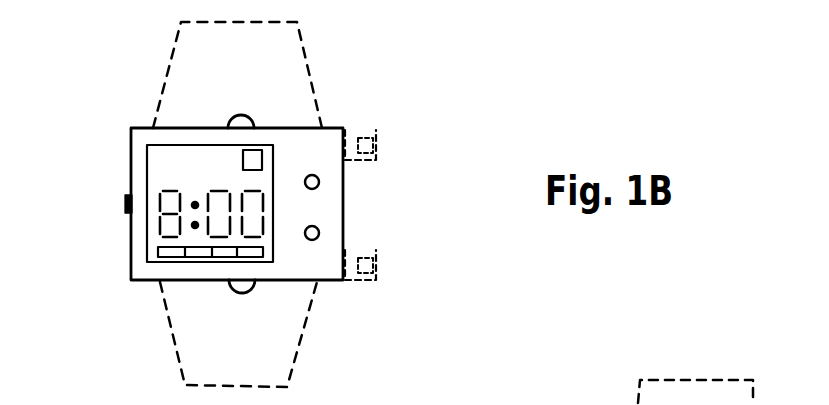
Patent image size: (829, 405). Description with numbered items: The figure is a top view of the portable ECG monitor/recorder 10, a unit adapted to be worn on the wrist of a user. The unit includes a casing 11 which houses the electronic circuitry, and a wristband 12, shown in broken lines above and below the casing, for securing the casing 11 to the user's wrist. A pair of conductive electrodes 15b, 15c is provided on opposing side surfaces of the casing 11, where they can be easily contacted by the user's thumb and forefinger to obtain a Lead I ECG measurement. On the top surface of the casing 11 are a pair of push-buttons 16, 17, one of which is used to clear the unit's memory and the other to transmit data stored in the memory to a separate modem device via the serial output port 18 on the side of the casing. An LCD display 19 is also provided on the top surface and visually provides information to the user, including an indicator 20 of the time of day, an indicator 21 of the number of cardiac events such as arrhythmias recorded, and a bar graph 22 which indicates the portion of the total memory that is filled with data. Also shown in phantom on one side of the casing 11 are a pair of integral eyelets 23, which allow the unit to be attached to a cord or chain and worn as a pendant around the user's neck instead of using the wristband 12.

The portable ECG monitor/recorder 10 is at (127, 99).
The casing 11 is at (329, 283).
The wristband 12 is at (293, 346).
The conductive electrode 15b is at (240, 296).
The conductive electrode 15c is at (240, 115).
The push-button 16 is at (320, 182).
The push-button 17 is at (320, 233).
The serial output port 18 is at (125, 205).
The LCD display 19 is at (150, 238).
The indicator of the time of day 20 is at (158, 194).
The indicator of the number of cardiac events 21 is at (258, 155).
The bar graph 22 is at (156, 256).
The integral eyelets 23 is at (377, 133).